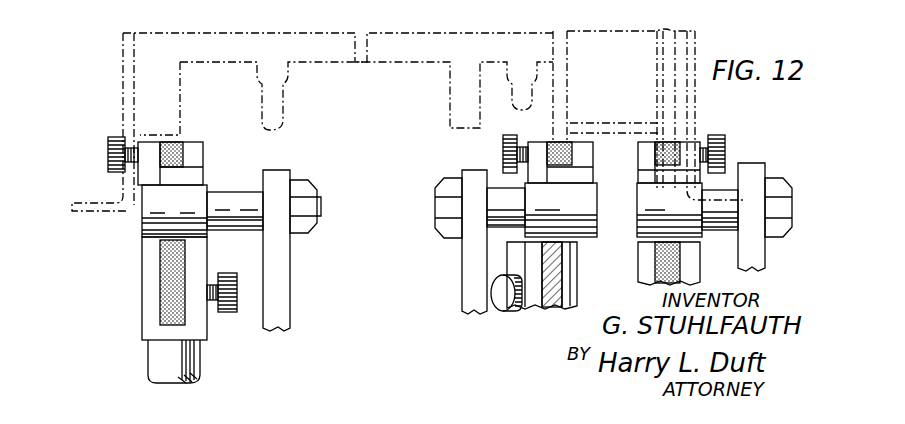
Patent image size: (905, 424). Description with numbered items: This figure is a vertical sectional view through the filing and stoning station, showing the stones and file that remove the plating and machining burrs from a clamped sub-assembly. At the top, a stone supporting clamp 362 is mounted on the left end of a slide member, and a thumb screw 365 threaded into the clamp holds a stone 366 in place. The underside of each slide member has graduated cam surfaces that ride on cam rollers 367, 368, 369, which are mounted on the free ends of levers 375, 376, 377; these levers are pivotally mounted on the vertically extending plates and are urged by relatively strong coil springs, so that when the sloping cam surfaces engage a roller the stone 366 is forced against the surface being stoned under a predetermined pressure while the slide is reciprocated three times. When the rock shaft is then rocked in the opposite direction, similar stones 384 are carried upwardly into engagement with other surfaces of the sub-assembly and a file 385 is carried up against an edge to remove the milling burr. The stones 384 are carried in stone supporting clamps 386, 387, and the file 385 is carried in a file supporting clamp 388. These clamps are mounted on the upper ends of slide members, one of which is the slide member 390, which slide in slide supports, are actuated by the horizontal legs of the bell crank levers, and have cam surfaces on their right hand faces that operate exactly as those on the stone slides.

The stone supporting clamp 362 is at (192, 161).
The thumb screw 365 is at (110, 146).
The stone 366 is at (167, 145).
The cam roller 367 is at (188, 198).
The cam roller 368 is at (532, 200).
The cam roller 369 is at (690, 228).
The lever 375 is at (279, 190).
The lever 376 is at (475, 290).
The lever 377 is at (753, 175).
The stone 384 is at (167, 273).
The file 385 is at (560, 265).
The stone supporting clamp 386 is at (150, 303).
The stone supporting clamp 387 is at (648, 273).
The file supporting clamp 388 is at (522, 263).
The slide member 390 is at (165, 357).